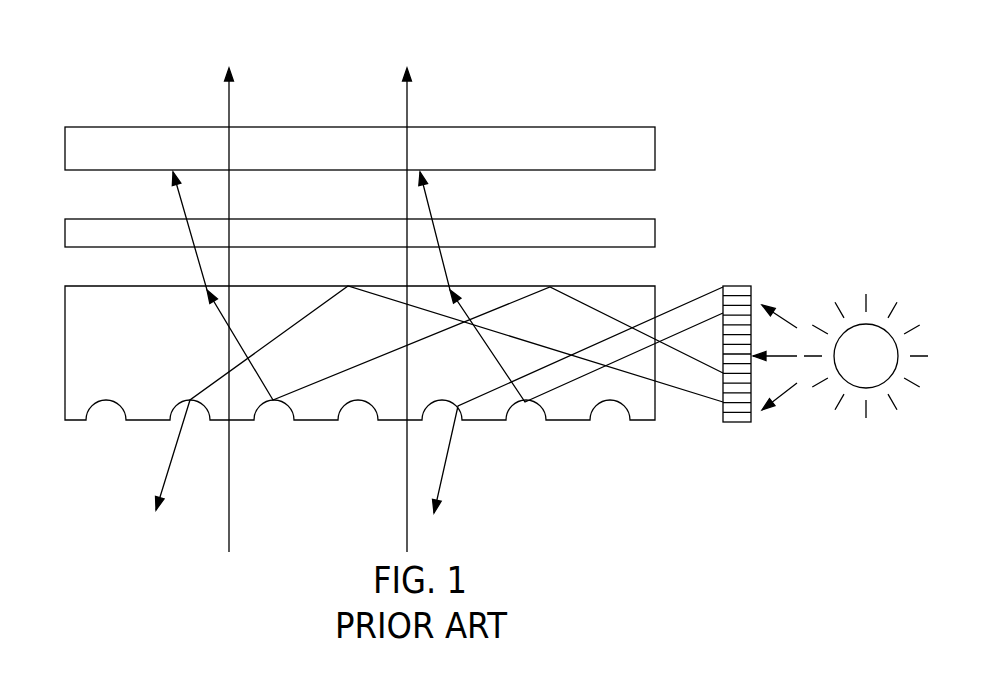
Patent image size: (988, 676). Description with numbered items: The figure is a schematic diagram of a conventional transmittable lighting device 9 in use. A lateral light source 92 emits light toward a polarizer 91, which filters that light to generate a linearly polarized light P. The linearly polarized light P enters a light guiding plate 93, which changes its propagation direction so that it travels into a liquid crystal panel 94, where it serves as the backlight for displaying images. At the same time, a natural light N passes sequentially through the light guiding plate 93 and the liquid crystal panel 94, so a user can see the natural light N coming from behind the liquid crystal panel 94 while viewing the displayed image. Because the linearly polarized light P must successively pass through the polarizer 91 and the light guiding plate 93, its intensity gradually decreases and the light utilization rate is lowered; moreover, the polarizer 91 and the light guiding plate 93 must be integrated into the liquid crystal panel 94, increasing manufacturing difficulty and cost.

The conventional transmittable lighting device 9 is at (647, 80).
The polarizer 91 is at (737, 290).
The lateral light source 92 is at (873, 327).
The light guiding plate 93 is at (68, 355).
The liquid crystal panel 94 is at (56, 144).
The linearly polarized light P is at (180, 203).
The natural light N is at (230, 477).